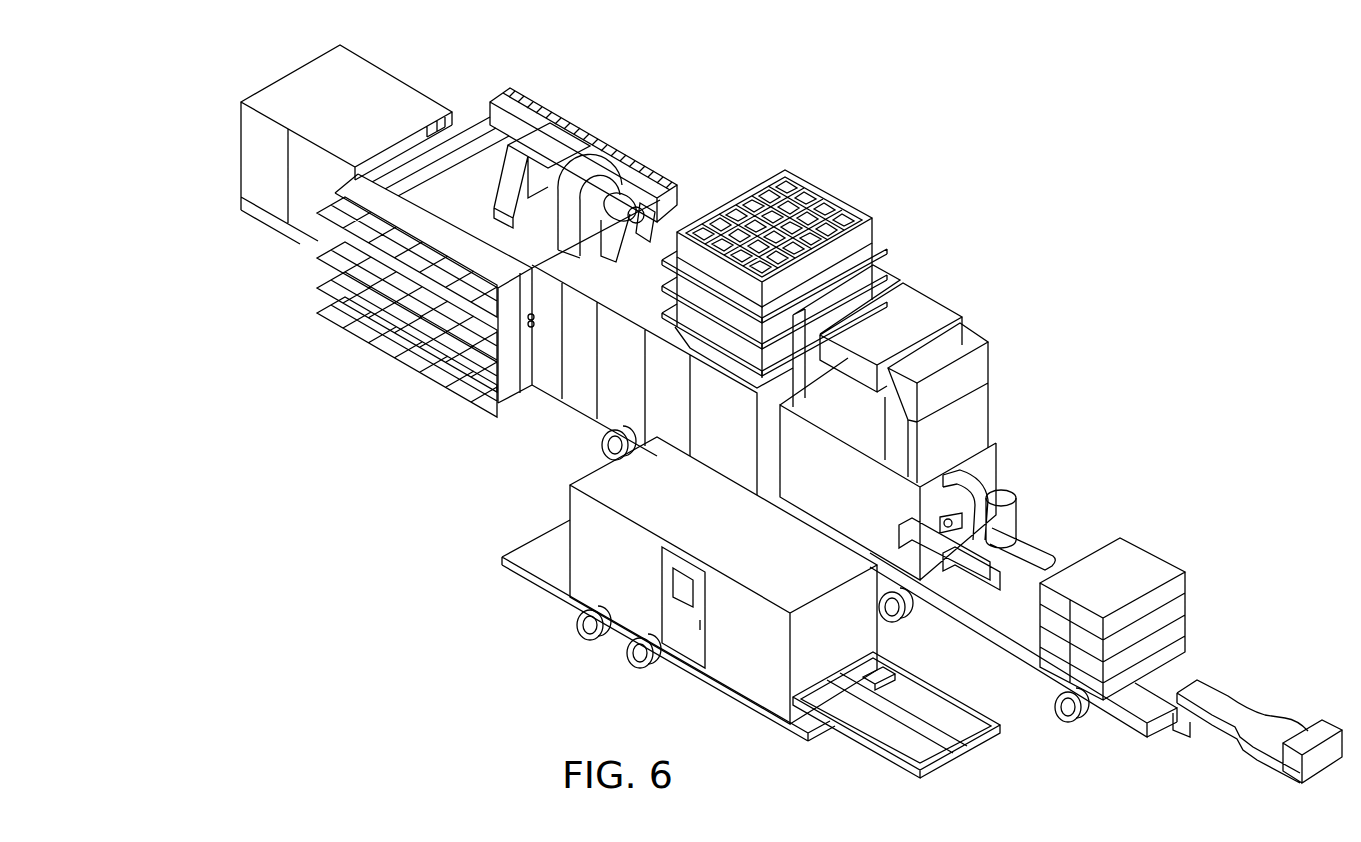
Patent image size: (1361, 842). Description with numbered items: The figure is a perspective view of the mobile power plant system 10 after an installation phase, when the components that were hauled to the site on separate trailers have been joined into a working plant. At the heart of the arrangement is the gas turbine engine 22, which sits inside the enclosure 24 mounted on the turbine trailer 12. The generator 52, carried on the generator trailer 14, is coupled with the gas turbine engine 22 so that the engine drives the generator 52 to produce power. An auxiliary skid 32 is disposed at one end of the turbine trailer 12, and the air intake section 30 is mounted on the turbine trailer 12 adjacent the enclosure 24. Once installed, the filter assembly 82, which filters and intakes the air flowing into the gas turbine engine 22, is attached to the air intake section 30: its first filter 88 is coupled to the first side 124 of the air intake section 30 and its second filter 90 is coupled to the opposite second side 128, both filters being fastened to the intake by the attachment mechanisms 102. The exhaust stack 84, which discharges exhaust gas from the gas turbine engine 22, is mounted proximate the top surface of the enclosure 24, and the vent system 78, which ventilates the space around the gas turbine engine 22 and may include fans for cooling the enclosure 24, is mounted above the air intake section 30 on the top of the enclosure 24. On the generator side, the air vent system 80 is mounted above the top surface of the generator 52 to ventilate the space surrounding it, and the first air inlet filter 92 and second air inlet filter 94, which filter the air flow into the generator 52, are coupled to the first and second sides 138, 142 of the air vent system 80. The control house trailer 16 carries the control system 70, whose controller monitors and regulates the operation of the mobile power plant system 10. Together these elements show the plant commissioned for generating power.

The mobile power plant system 10 is at (787, 405).
The turbine trailer 12 is at (710, 183).
The generator trailer 14 is at (1077, 488).
The control house trailer 16 is at (543, 626).
The gas turbine engine 22 is at (616, 397).
The enclosure 24 is at (577, 387).
The air intake section 30 is at (474, 100).
The auxiliary skid 32 is at (420, 55).
The generator 52 is at (992, 457).
The control system 70 is at (743, 656).
The vent system 78 is at (603, 168).
The air vent system 80 is at (960, 296).
The filter assembly 82 is at (364, 310).
The exhaust stack 84 is at (828, 192).
The first filter 88 is at (328, 316).
The second filter 90 is at (563, 103).
The first air inlet filter 92 is at (882, 276).
The second air inlet filter 94 is at (992, 342).
The attachment mechanisms 102 is at (532, 327).
The first side 124 is at (408, 388).
The second side 128 is at (628, 124).
The first side 138 is at (1000, 368).
The second side 142 is at (898, 243).